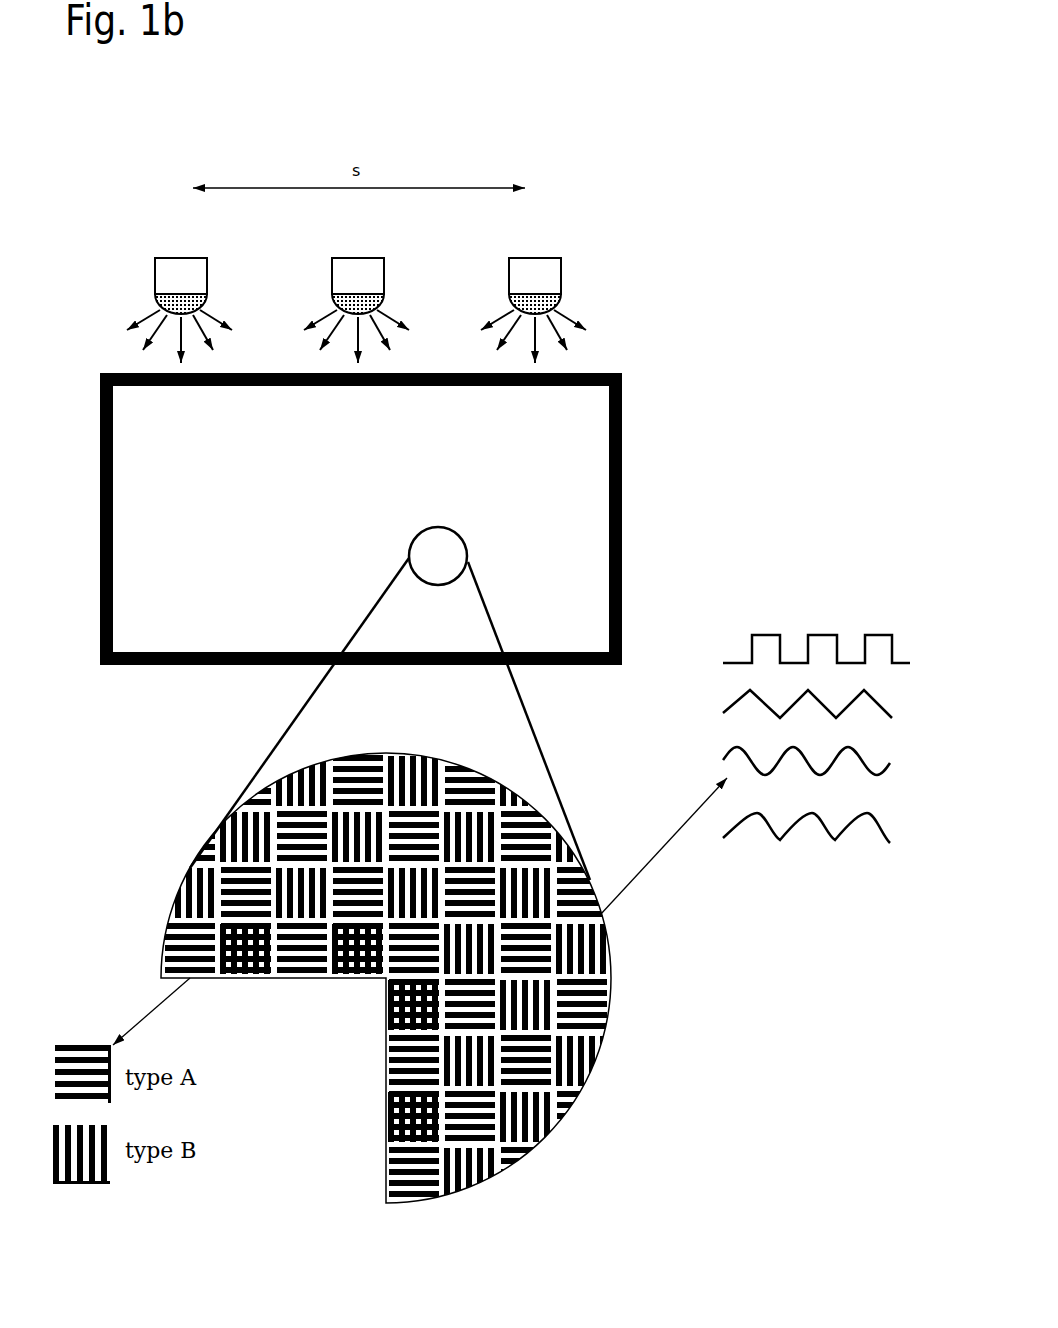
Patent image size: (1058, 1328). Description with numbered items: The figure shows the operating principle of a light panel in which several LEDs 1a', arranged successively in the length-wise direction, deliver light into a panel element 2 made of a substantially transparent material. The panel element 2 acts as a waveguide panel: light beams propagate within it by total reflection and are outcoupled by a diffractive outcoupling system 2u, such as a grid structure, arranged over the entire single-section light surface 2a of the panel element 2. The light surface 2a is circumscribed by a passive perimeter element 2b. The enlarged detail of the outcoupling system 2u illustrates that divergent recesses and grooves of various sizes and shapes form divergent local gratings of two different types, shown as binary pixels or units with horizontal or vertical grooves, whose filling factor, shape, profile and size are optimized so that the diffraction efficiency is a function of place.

The LEDs 1a' is at (370, 277).
The panel element 2 is at (578, 428).
The light surface 2a is at (547, 518).
The passive perimeter element 2b is at (622, 547).
The outcoupling system 2u is at (598, 1057).